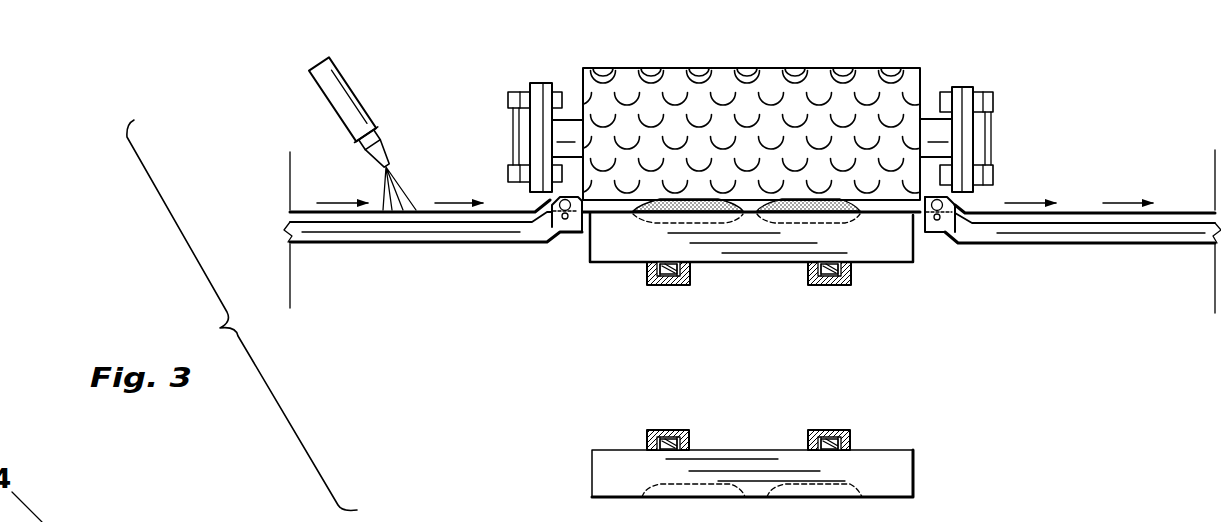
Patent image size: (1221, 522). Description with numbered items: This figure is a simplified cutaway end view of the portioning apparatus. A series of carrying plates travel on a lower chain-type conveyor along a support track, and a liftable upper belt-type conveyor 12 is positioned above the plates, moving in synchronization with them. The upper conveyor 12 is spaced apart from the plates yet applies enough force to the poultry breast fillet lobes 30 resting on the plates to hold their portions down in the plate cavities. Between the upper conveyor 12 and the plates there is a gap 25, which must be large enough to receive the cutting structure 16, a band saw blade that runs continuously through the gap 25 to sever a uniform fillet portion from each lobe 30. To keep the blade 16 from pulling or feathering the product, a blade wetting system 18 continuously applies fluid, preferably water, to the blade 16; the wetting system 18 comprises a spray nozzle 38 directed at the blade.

The upper belt-type conveyor 12 is at (733, 67).
The cutting structure 16 is at (500, 213).
The blade wetting system 18 is at (342, 82).
The gap 25 is at (910, 227).
The poultry breast fillet lobe 30 is at (697, 197).
The spray nozzle 38 is at (380, 143).